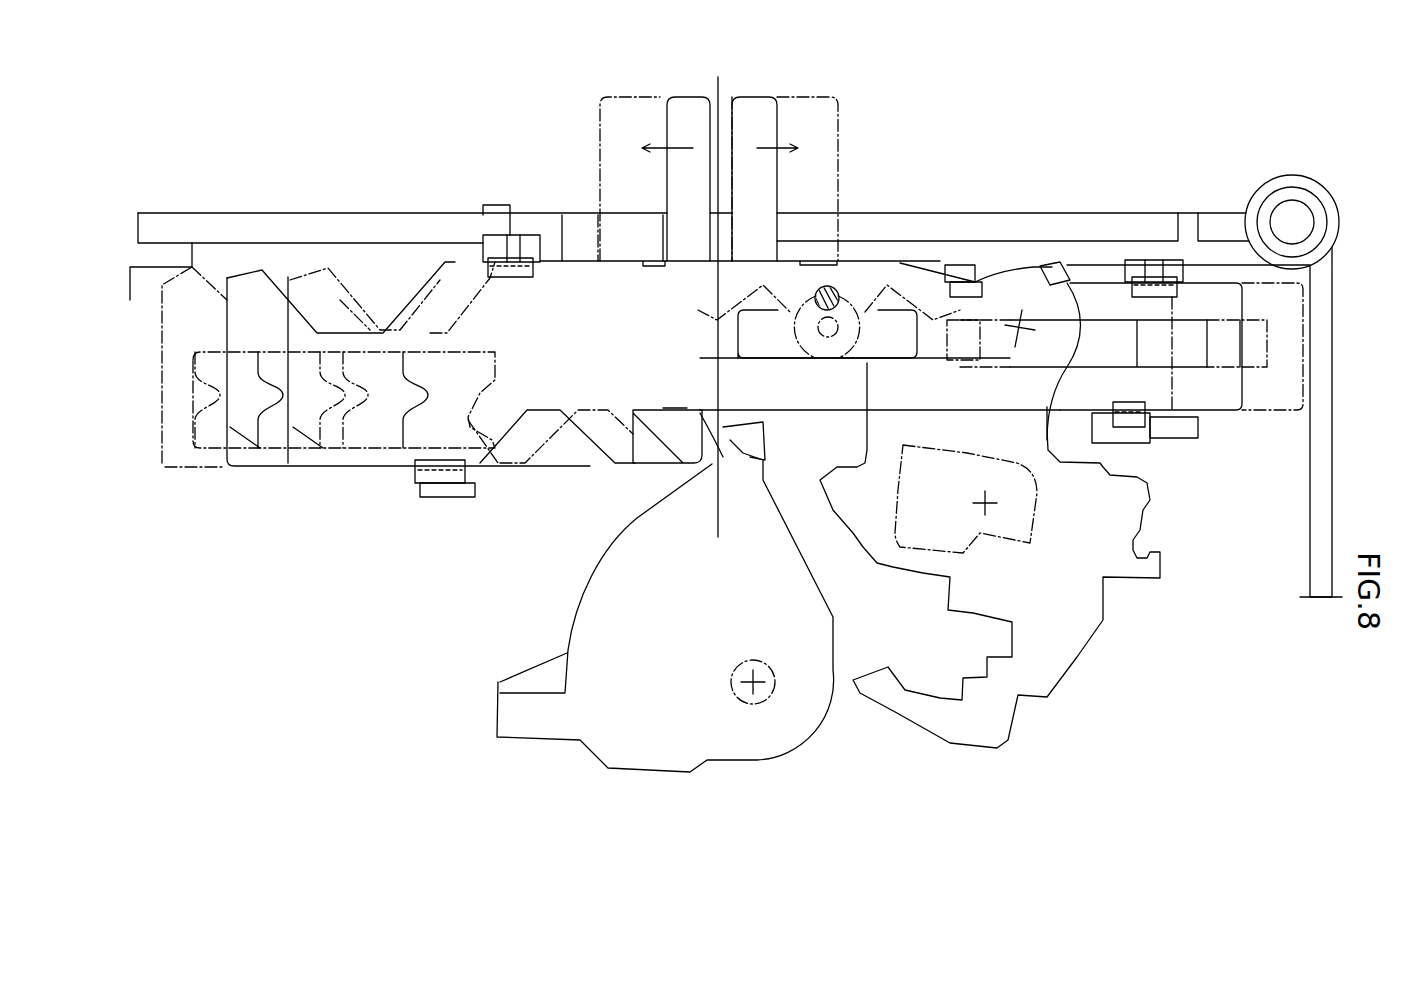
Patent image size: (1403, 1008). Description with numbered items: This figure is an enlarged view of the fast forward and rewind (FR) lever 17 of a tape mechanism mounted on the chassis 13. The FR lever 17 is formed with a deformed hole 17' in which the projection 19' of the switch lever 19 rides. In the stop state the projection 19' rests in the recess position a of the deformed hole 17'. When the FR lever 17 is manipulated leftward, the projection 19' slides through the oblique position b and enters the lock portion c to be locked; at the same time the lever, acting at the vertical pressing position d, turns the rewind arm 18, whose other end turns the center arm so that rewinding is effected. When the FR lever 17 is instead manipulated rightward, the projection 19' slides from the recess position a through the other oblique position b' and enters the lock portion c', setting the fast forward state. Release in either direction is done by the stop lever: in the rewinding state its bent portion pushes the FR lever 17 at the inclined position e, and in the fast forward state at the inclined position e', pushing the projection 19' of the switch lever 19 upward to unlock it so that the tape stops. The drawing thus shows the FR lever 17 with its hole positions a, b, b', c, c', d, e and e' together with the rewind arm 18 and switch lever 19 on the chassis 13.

The chassis 13 is at (1108, 257).
The fast forward and rewind (FR) lever 17 is at (721, 287).
The deformed hole of the FR lever 17' is at (817, 355).
The rewind arm 18 is at (710, 460).
The switch lever 19 is at (989, 555).
The projection of the switch lever 19' is at (842, 283).
The recess position a is at (812, 285).
The oblique position b is at (796, 348).
The oblique position b' is at (852, 348).
The lock portion c is at (744, 344).
The lock portion c' is at (912, 344).
The vertical pressing position d is at (707, 433).
The inclined position e is at (376, 361).
The inclined position e' is at (374, 277).